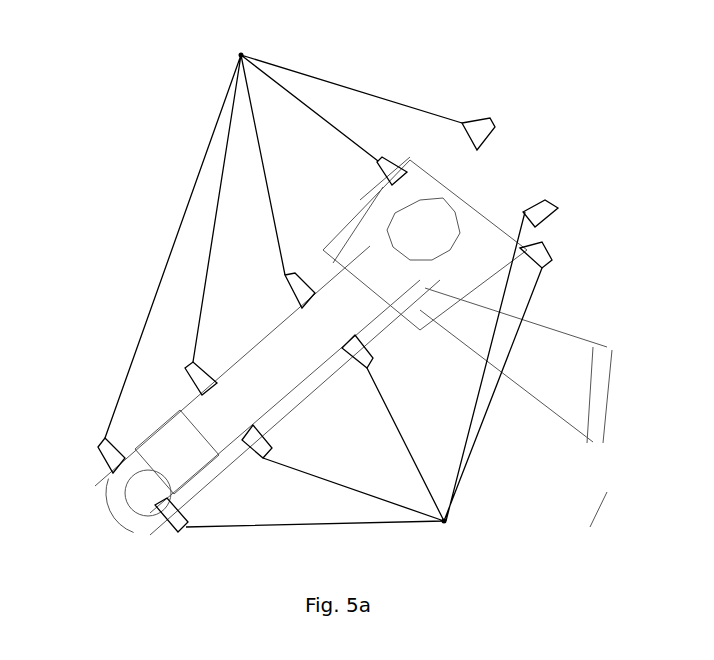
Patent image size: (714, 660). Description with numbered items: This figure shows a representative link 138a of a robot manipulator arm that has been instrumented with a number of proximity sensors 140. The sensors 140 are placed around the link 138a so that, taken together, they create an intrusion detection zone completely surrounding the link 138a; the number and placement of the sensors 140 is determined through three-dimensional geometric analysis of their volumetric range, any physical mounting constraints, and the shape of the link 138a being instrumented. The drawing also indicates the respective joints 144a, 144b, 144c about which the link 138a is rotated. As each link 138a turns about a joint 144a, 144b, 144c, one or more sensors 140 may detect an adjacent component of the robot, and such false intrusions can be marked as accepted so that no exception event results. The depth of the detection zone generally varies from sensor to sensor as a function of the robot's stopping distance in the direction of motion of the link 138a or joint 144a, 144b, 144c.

The proximity sensors 140 is at (323, 289).
The link 138a is at (305, 378).
The joint 144a is at (428, 200).
The joint 144b is at (152, 493).
The joint 144c is at (608, 405).